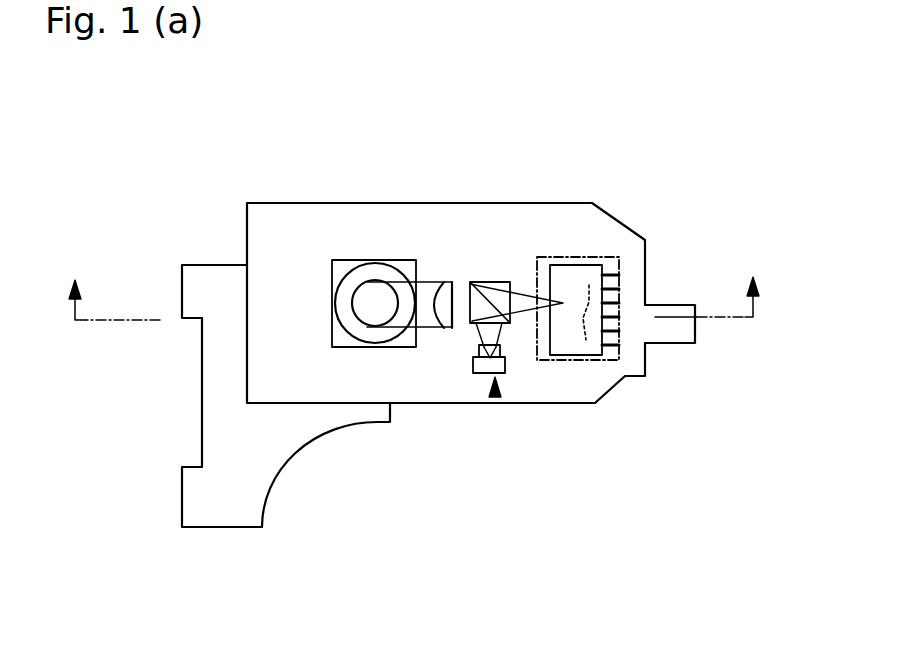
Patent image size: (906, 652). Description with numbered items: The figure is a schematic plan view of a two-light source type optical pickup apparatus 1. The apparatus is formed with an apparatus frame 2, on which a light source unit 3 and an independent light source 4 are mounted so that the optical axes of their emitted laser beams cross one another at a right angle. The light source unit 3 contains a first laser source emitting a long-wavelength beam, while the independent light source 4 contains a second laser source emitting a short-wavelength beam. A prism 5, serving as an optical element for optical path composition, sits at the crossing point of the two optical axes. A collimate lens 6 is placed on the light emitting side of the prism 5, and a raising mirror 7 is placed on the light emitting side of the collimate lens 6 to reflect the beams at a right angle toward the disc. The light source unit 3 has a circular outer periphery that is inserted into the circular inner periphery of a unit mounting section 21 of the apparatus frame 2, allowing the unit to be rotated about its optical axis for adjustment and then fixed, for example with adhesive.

The optical pickup apparatus 1 is at (650, 186).
The apparatus frame 2 is at (212, 298).
The light source unit 3 is at (612, 259).
The independent light source 4 is at (495, 395).
The prism 5 is at (497, 262).
The collimate lens 6 is at (436, 276).
The raising mirror 7 is at (407, 340).
The unit mounting section 21 is at (593, 363).